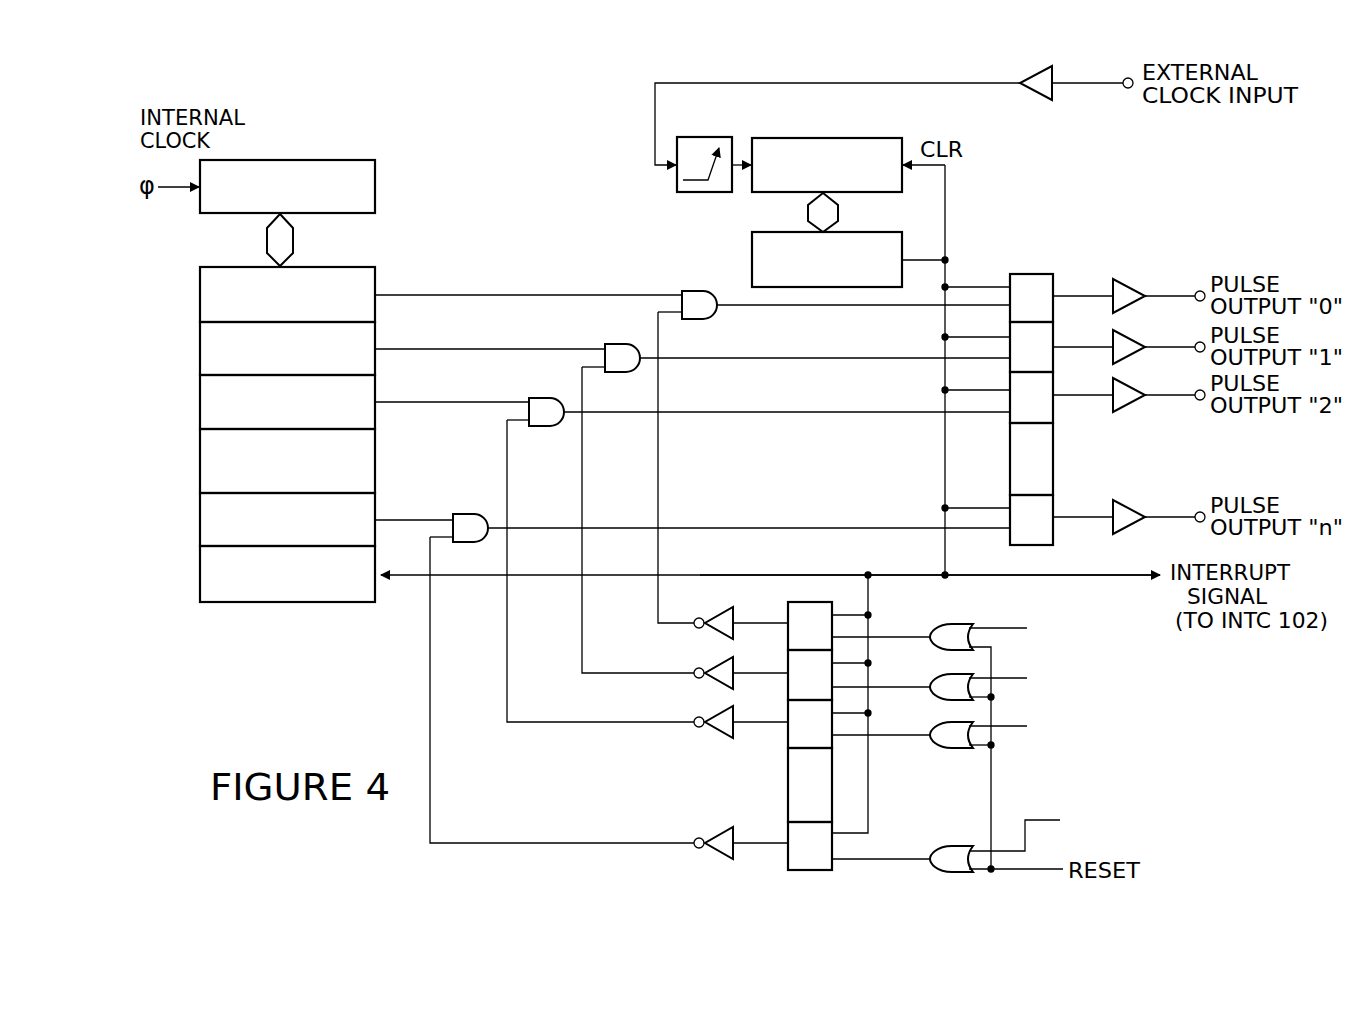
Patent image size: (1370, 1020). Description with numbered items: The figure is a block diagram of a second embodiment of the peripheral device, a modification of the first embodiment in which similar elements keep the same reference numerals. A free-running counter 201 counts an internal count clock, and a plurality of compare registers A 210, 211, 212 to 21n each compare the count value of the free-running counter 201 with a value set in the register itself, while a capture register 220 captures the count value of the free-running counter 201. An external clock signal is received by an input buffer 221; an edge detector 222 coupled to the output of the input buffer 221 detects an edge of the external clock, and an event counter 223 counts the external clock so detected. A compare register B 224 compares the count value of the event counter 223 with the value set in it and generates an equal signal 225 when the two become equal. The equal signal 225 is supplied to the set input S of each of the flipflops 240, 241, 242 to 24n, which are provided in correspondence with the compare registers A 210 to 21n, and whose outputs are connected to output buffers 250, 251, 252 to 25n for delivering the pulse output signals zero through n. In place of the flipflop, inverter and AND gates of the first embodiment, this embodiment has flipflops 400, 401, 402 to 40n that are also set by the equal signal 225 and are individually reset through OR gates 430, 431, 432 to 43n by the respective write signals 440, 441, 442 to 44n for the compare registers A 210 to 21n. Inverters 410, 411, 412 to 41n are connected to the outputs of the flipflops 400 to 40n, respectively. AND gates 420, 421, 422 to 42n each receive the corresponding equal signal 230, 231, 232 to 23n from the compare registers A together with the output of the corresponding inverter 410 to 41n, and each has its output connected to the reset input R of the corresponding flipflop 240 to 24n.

The free-running counter 201 is at (318, 159).
The compare register A 210 is at (200, 306).
The compare register A 211 is at (200, 360).
The compare register A 212 is at (200, 413).
The compare register A 21n is at (200, 533).
The capture register 220 is at (200, 587).
The equal signal 230 is at (394, 294).
The equal signal 231 is at (394, 348).
The equal signal 232 is at (394, 401).
The equal signal 23n is at (394, 519).
The AND gate 420 is at (690, 291).
The AND gate 421 is at (616, 344).
The AND gate 422 is at (540, 398).
The AND gate 42n is at (464, 514).
The input buffer 221 is at (1052, 98).
The edge detector 222 is at (677, 176).
The event counter 223 is at (856, 138).
The compare register B 224 is at (856, 232).
The equal signal 225 is at (945, 226).
The flipflop 240 is at (1058, 287).
The flipflop 241 is at (1058, 336).
The flipflop 242 is at (1058, 386).
The flipflop 24n is at (1058, 510).
The output buffer 250 is at (1134, 290).
The output buffer 251 is at (1134, 340).
The output buffer 252 is at (1134, 390).
The output buffer 25n is at (1134, 511).
The flipflop 400 is at (787, 612).
The flipflop 401 is at (787, 662).
The flipflop 402 is at (787, 711).
The flipflop 40n is at (787, 832).
The inverter 410 is at (716, 612).
The inverter 411 is at (716, 662).
The inverter 412 is at (716, 712).
The inverter 41n is at (716, 834).
The OR gate 430 is at (926, 628).
The OR gate 431 is at (926, 678).
The OR gate 432 is at (926, 726).
The OR gate 43n is at (926, 852).
The write signal 440 is at (1062, 629).
The write signal 441 is at (1062, 679).
The write signal 442 is at (1062, 727).
The write signal 44n is at (1119, 829).